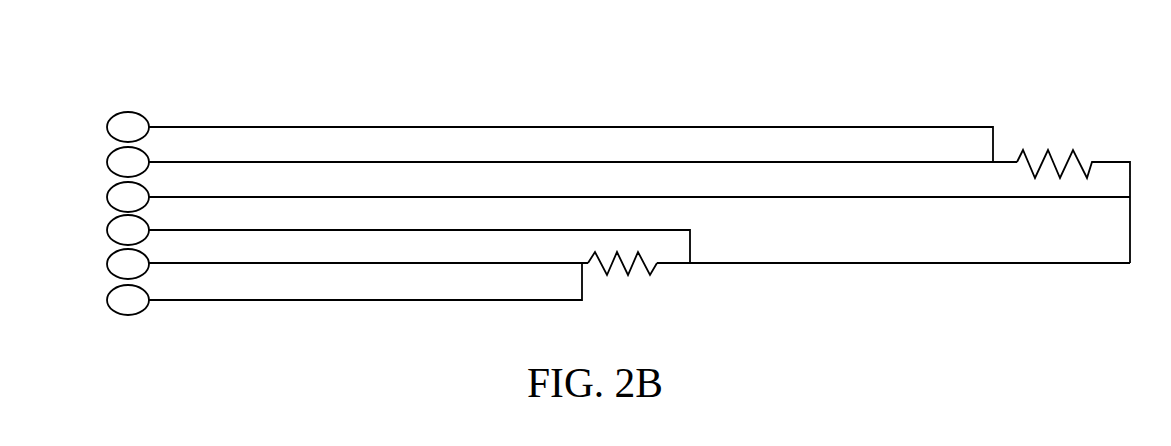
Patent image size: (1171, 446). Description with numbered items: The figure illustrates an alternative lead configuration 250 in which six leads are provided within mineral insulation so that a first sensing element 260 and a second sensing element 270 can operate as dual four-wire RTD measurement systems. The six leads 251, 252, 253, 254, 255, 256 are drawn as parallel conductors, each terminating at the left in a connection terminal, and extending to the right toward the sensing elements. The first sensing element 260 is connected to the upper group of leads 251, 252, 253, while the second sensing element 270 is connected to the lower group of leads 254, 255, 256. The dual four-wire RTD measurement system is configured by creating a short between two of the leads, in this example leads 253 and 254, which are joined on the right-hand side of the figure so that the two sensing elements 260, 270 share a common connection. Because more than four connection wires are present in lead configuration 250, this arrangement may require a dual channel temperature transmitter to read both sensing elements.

The lead configuration 250 is at (948, 60).
The lead 251 is at (527, 137).
The lead 252 is at (539, 162).
The lead 253 is at (596, 197).
The lead 254 is at (376, 239).
The lead 255 is at (596, 264).
The lead 256 is at (322, 289).
The first sensing element 260 is at (1058, 137).
The second sensing element 270 is at (628, 287).